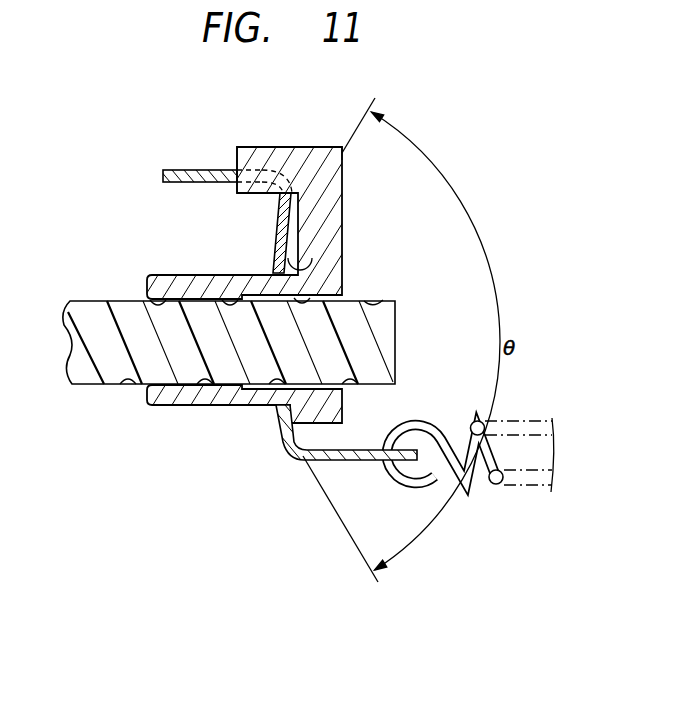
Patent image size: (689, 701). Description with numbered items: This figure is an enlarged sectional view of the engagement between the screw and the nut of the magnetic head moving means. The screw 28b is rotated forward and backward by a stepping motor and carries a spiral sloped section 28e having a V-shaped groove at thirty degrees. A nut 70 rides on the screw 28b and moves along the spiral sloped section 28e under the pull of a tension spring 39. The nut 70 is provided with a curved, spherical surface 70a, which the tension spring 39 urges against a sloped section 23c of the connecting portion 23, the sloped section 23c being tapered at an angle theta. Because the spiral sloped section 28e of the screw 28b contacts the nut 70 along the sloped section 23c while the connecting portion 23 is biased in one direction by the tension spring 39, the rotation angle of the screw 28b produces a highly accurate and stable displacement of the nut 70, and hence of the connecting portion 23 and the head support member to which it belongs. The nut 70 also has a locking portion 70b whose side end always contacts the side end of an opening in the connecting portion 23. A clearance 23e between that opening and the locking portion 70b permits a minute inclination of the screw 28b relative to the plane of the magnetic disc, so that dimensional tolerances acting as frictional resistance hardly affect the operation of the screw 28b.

The nut 70 is at (335, 273).
The curved surface 70a is at (314, 258).
The locking portion 70b is at (270, 147).
The connecting portion 23 is at (163, 176).
The sloped section 23c is at (276, 258).
The clearance 23e is at (228, 170).
The screw 28b is at (387, 328).
The spiral sloped section 28e is at (373, 303).
The tension spring 39 is at (498, 485).